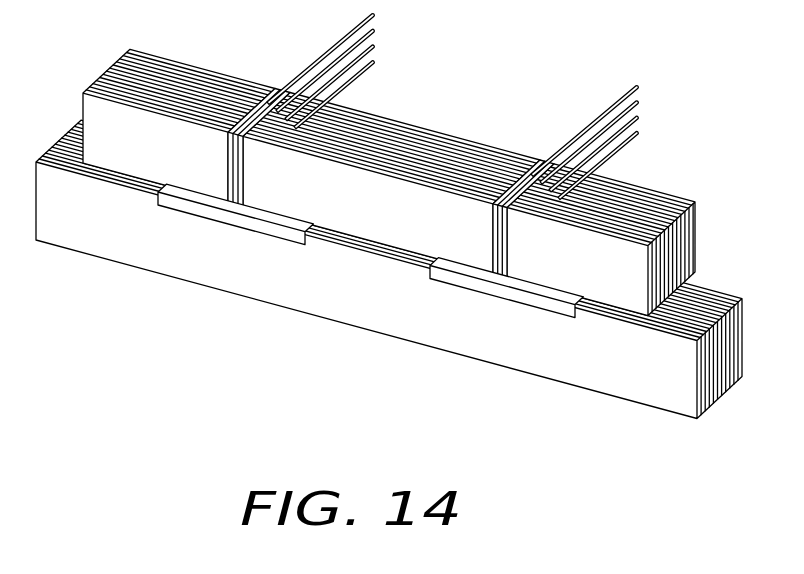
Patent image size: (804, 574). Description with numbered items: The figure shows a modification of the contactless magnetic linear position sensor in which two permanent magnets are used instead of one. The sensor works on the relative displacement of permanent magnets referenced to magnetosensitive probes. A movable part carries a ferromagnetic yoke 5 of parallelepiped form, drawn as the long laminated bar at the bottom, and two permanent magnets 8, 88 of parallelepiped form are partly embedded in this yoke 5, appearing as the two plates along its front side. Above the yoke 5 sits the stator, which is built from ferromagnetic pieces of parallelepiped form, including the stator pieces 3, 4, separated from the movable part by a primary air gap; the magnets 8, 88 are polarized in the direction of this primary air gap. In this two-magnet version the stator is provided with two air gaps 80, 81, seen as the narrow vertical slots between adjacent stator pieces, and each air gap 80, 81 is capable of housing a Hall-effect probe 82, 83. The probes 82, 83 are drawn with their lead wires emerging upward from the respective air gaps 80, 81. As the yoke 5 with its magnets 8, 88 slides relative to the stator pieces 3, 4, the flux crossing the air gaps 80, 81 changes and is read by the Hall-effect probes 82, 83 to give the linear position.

The stator piece 3 is at (434, 148).
The stator piece 4 is at (197, 88).
The ferromagnetic yoke 5 is at (620, 377).
The permanent magnet 8 is at (227, 217).
The permanent magnet 88 is at (482, 287).
The air gap 80 is at (267, 88).
The air gap 81 is at (538, 178).
The Hall-effect probe 82 is at (375, 31).
The Hall-effect probe 83 is at (640, 118).